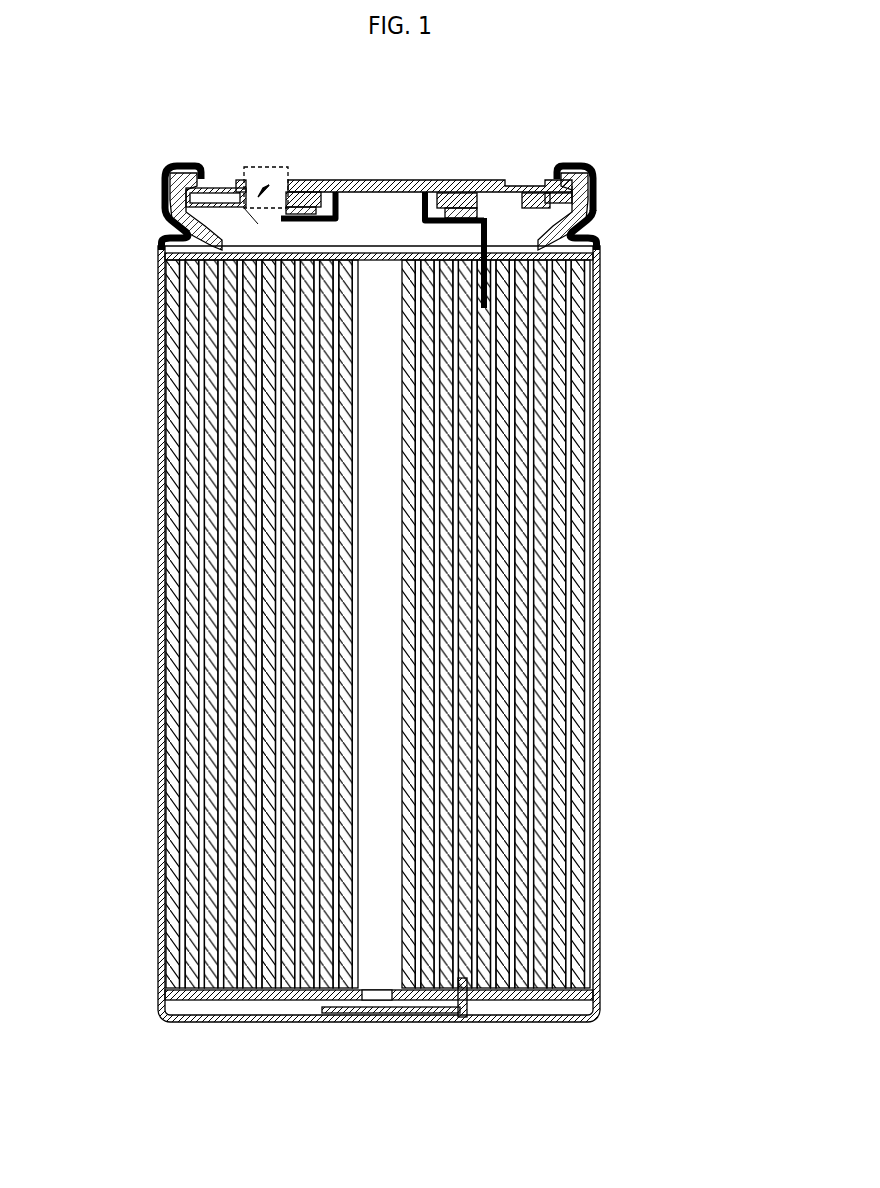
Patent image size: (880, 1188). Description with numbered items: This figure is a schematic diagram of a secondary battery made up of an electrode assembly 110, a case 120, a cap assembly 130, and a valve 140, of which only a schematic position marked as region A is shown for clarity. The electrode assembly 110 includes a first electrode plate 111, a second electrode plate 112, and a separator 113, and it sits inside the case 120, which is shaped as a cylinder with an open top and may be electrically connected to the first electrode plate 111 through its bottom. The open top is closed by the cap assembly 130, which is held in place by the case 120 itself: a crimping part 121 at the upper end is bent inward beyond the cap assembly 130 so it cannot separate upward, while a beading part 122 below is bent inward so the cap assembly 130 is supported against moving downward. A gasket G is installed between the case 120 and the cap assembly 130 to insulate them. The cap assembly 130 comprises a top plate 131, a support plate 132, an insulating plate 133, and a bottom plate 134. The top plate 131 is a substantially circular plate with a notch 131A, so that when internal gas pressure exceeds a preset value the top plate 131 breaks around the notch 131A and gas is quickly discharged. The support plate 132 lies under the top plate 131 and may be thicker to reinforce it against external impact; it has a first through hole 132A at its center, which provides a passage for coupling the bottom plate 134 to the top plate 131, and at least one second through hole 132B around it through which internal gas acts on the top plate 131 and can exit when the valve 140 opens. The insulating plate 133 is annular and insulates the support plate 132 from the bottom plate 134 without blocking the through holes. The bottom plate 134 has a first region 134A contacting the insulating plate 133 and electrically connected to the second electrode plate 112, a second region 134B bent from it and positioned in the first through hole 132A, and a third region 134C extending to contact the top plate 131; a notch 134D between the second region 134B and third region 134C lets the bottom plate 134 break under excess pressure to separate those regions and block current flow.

The electrode assembly 110 is at (470, 624).
The first electrode plate 111 is at (600, 505).
The second electrode plate 112 is at (580, 598).
The separator 113 is at (580, 540).
The case 120 is at (600, 740).
The crimping part 121 is at (598, 172).
The beading part 122 is at (586, 236).
The cap assembly 130 is at (441, 195).
The top plate 131 is at (216, 182).
The notch 131A is at (520, 180).
The support plate 132 is at (288, 181).
The first through hole 132A is at (494, 180).
The second through hole 132B is at (157, 245).
The insulating plate 133 is at (313, 180).
The bottom plate 134 is at (338, 180).
The first region 134A is at (490, 282).
The second region 134B is at (483, 322).
The third region 134C is at (390, 180).
The notch 134D is at (415, 180).
The valve 140 is at (266, 208).
The region A is at (246, 205).
The gasket G is at (598, 190).